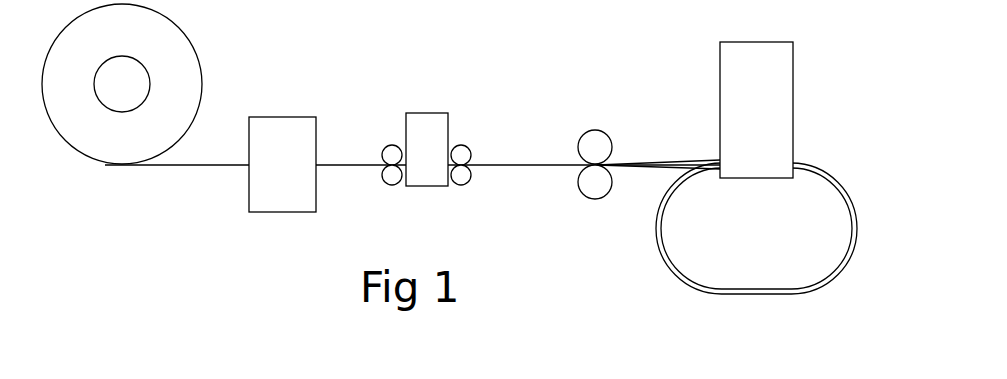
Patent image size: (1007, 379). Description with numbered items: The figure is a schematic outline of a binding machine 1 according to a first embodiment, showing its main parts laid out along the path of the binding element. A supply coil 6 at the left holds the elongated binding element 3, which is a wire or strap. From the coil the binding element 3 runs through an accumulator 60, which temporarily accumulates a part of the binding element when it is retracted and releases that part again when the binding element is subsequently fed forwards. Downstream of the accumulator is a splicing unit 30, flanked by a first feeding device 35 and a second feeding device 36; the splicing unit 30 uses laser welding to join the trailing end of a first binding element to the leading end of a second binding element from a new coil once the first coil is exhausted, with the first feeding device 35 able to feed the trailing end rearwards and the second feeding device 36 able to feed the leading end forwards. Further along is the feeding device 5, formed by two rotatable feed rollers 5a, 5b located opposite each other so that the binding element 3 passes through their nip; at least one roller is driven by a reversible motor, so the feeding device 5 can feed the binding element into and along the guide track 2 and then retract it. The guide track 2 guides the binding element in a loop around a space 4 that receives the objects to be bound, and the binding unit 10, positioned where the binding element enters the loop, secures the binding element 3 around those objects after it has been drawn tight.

The binding machine 1 is at (150, 237).
The guide track 2 is at (825, 175).
The binding element 3 is at (522, 160).
The space 4 is at (772, 258).
The feeding device 5 is at (613, 157).
The feed roller 5a is at (605, 140).
The feed roller 5b is at (593, 192).
The supply coil 6 is at (187, 55).
The binding unit 10 is at (761, 47).
The splicing unit 30 is at (428, 100).
The first feeding device 35 is at (464, 137).
The second feeding device 36 is at (391, 138).
The accumulator 60 is at (289, 122).